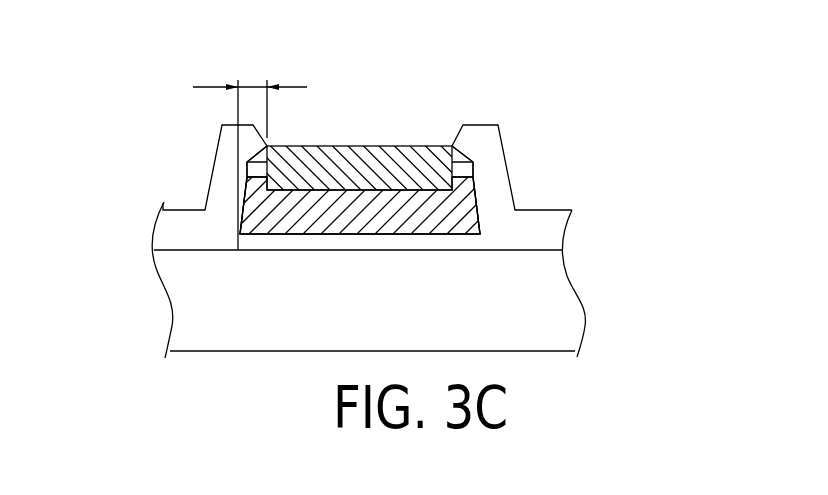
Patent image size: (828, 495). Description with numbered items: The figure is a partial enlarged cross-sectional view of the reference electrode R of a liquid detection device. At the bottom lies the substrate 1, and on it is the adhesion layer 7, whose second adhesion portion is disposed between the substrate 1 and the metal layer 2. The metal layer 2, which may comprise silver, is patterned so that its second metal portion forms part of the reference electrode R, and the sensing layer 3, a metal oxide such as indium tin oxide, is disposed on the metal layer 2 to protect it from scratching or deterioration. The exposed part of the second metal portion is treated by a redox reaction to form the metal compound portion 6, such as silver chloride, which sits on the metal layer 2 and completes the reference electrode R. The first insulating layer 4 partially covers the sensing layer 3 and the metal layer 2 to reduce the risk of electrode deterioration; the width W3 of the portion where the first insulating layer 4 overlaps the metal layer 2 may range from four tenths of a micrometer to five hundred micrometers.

The substrate 1 is at (558, 282).
The metal layer 2 is at (475, 200).
The sensing layer 3 is at (473, 163).
The first insulating layer 4 is at (560, 238).
The metal compound portion 6 is at (385, 157).
The adhesion layer 7 is at (478, 247).
The width W3 is at (250, 147).
The reference electrode R is at (122, 144).